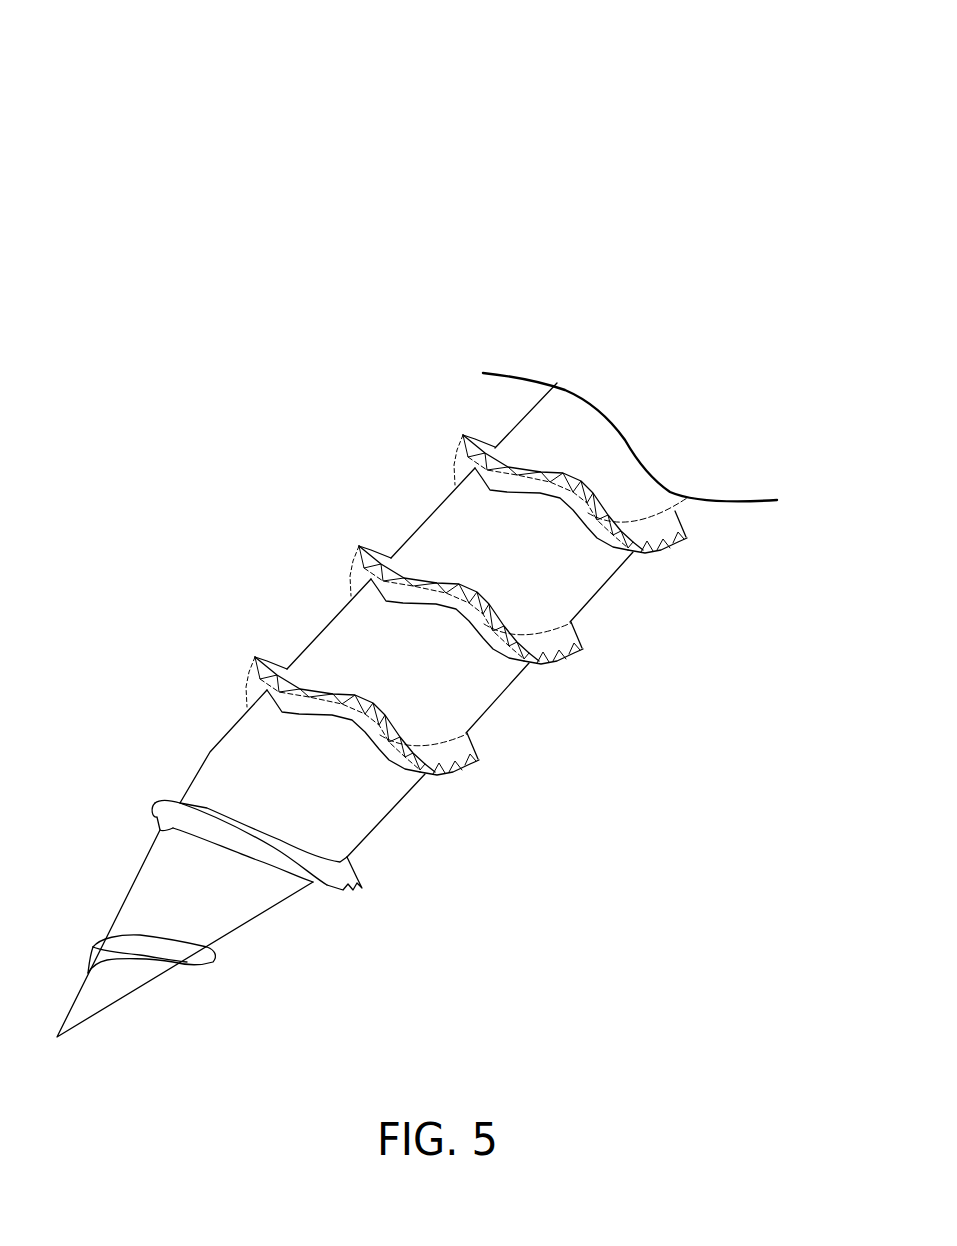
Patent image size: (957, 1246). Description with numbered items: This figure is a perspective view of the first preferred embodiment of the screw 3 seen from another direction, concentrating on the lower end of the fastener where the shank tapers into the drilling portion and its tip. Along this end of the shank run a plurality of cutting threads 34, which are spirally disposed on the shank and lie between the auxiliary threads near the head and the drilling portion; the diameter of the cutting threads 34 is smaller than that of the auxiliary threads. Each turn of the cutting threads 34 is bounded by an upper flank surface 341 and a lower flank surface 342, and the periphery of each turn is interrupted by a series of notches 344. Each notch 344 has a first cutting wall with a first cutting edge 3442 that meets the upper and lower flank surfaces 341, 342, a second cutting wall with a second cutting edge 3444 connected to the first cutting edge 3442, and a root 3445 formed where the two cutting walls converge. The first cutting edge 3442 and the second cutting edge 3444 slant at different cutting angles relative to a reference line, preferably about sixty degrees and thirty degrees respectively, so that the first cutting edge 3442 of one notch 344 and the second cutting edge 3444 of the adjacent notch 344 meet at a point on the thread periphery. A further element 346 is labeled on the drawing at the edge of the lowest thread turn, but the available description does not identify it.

The screw 3 is at (119, 114).
The cutting threads 34 is at (606, 640).
The upper flank surface 341 is at (307, 670).
The lower flank surface 342 is at (192, 680).
The notch 344 is at (481, 830).
The first cutting edge 3442 is at (458, 830).
The second cutting edge 3444 is at (510, 805).
The root 3445 is at (428, 729).
The end tooth 346 is at (528, 771).